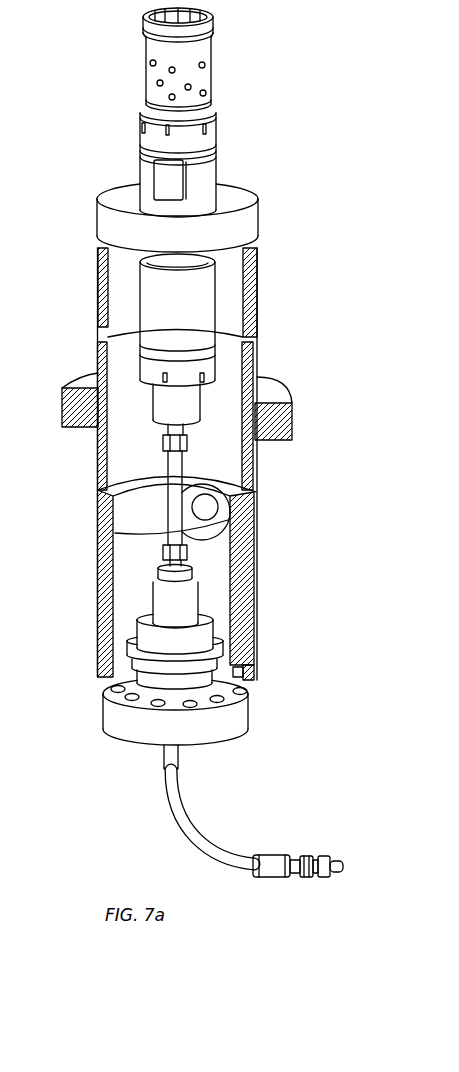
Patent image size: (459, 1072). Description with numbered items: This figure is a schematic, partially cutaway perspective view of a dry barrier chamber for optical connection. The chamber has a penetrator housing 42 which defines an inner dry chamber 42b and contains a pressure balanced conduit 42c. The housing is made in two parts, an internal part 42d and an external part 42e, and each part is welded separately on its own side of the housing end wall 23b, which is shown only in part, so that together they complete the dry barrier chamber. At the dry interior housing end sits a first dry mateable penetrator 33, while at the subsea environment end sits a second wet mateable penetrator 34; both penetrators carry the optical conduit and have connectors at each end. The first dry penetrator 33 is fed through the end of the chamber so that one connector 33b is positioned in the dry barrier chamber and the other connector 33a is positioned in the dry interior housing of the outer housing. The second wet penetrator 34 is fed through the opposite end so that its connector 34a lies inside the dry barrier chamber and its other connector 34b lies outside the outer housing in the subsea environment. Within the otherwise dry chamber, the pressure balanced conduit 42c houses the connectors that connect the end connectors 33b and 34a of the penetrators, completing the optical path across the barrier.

The housing end wall 23b is at (62, 411).
The first dry mateable penetrator 33 is at (112, 713).
The connector 33a is at (238, 756).
The connector 33b is at (128, 656).
The second wet mateable penetrator 34 is at (105, 225).
The connector 34a is at (202, 290).
The connector 34b is at (210, 165).
The penetrator housing 42 is at (281, 489).
The inner dry chamber 42b is at (216, 607).
The conduit 42c is at (175, 512).
The internal part 42d is at (100, 591).
The external part 42e is at (100, 281).